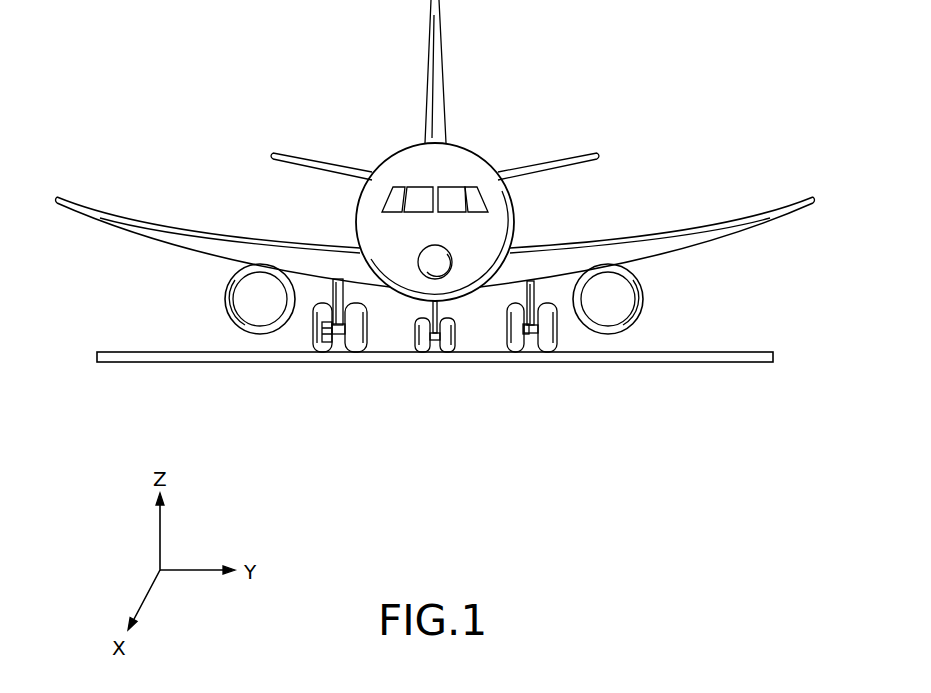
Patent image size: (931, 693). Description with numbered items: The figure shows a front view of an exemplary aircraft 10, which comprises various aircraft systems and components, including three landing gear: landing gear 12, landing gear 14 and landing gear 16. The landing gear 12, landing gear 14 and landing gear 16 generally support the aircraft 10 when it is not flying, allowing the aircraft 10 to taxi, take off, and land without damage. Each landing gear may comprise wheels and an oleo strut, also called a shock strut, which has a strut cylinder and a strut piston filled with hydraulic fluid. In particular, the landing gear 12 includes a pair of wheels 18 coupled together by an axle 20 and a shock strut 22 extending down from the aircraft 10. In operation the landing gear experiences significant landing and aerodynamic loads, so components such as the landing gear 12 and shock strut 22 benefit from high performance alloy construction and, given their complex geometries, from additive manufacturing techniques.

The aircraft 10 is at (322, 74).
The landing gear 12 is at (552, 330).
The landing gear 14 is at (329, 284).
The landing gear 16 is at (408, 340).
The wheels 18 is at (516, 340).
The axle 20 is at (530, 340).
The shock strut 22 is at (523, 306).